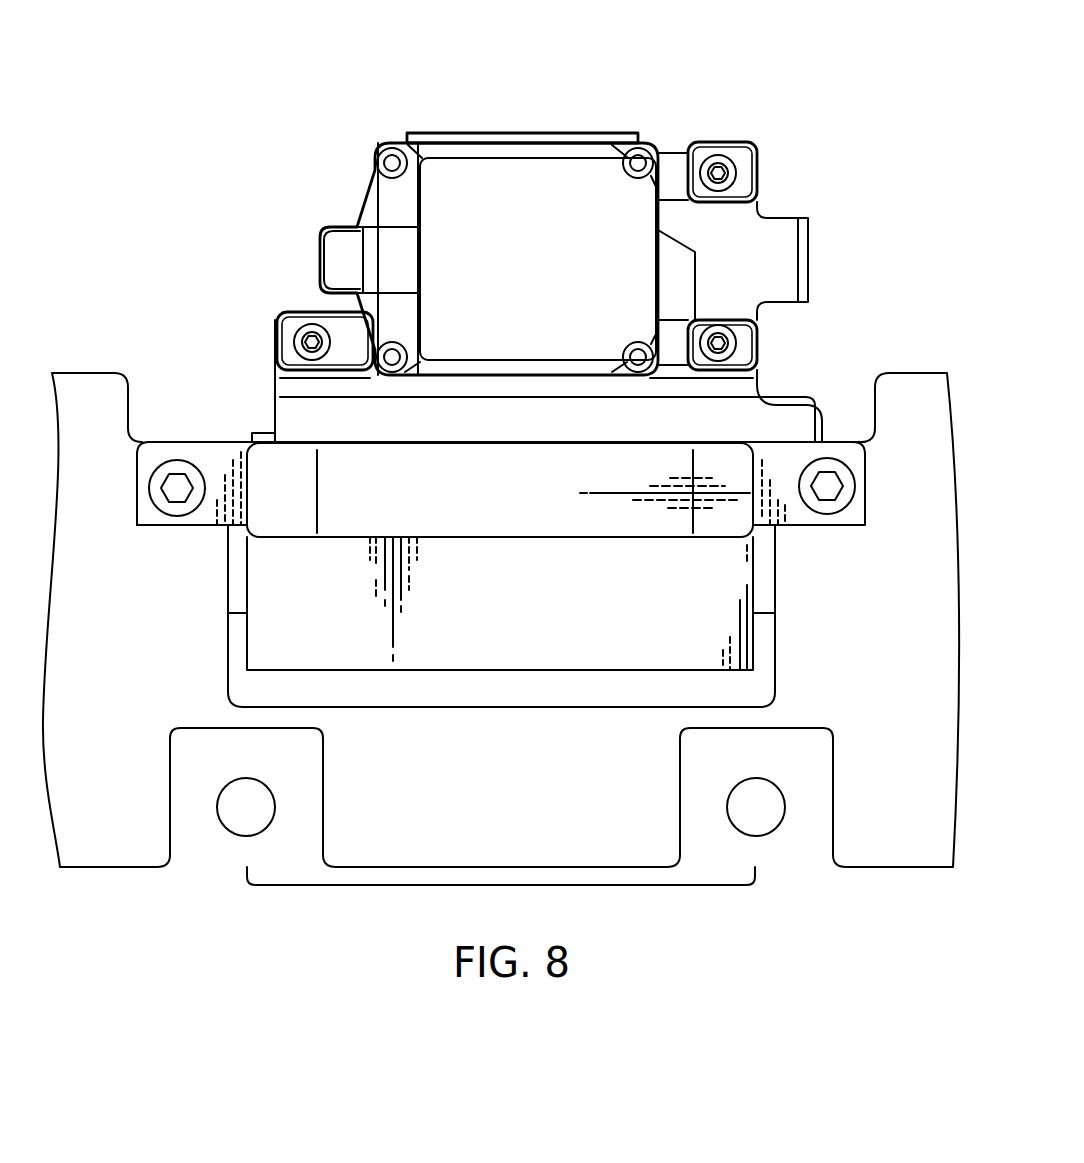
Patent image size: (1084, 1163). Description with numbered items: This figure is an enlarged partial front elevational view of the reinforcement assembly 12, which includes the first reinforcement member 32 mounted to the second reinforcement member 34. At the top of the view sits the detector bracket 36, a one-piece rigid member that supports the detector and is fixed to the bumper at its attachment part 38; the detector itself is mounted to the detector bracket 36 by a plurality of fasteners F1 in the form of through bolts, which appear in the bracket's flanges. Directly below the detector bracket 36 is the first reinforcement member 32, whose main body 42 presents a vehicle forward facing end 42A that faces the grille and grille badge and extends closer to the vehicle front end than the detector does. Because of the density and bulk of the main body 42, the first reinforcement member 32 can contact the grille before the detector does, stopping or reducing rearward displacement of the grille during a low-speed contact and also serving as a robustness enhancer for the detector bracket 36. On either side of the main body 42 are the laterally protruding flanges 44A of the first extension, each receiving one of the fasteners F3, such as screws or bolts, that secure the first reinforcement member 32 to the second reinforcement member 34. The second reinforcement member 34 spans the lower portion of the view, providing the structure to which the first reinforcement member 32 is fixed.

The reinforcement assembly 12 is at (818, 48).
The first reinforcement member 32 is at (455, 640).
The second reinforcement member 34 is at (896, 816).
The detector bracket 36 is at (757, 248).
The attachment part 38 is at (790, 423).
The main body 42 is at (642, 540).
The vehicle forward facing end 42A is at (552, 505).
The laterally protruding flanges 44A is at (212, 440).
The fasteners F1 is at (727, 170).
The fasteners F3 is at (176, 500).